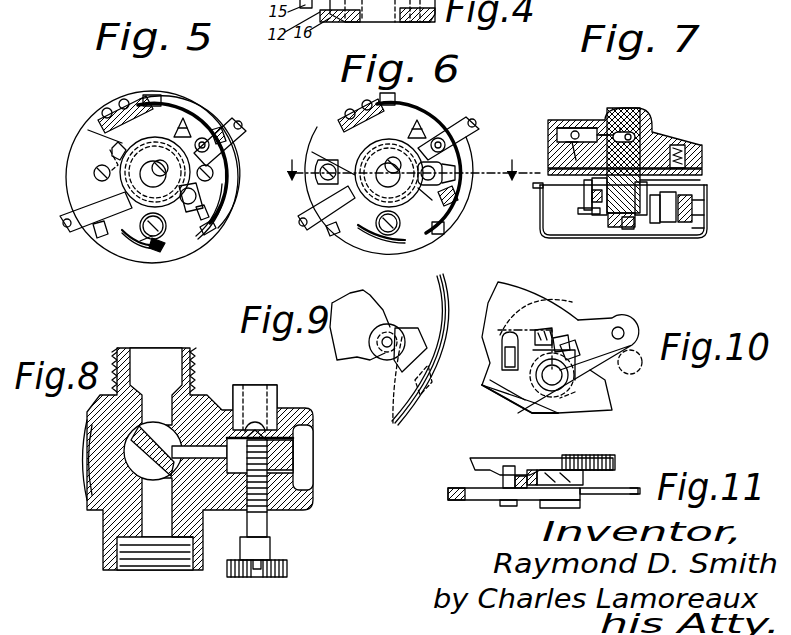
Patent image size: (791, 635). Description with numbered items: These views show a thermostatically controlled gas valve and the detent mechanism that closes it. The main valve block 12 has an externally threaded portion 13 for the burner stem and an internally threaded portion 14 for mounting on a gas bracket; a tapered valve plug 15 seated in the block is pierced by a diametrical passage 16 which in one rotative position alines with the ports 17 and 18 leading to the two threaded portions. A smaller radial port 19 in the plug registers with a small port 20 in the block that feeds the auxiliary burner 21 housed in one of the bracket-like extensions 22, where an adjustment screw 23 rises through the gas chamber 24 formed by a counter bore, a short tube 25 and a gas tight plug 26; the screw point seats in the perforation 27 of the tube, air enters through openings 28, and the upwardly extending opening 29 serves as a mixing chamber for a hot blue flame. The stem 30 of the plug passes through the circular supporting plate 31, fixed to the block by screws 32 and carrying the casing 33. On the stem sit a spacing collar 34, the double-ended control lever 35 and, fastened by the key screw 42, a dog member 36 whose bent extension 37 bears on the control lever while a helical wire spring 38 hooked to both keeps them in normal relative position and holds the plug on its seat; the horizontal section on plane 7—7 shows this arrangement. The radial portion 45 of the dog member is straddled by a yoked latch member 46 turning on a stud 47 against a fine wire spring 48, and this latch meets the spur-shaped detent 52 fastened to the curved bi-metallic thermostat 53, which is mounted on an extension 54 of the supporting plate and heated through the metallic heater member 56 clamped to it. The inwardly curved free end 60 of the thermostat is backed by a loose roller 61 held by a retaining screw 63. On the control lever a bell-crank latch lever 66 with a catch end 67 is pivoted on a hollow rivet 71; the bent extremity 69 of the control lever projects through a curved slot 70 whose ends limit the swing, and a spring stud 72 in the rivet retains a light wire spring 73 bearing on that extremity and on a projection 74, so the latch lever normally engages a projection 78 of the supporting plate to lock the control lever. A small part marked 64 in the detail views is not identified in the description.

In FIG. 6, the section plane 7— 7 is at (412, 178).
In FIG. 7, the main valve block 12 is at (650, 138).
In FIG. 8, the main valve block 12 is at (118, 432).
In FIG. 8, the externally threaded portion 13 is at (120, 350).
In FIG. 8, the internally threaded portion 14 is at (126, 548).
In FIG. 7, the tapered valve plug 15 is at (628, 128).
In FIG. 8, the tapered valve plug 15 is at (140, 443).
In FIG. 7, the diametrically extending passage 16 is at (634, 132).
In FIG. 8, the diametrically extending passage 16 is at (146, 458).
In FIG. 8, the port 17 is at (156, 400).
In FIG. 8, the port 18 is at (150, 510).
In FIG. 7, the smaller port 19 is at (617, 118).
In FIG. 8, the smaller port 19 is at (182, 540).
In FIG. 7, the small port 20 is at (602, 130).
In FIG. 8, the small port 20 is at (210, 460).
In FIG. 8, the auxiliary burner 21 is at (275, 407).
In FIG. 7, the bracket-like extensions 22 is at (686, 150).
In FIG. 8, the bracket-like extensions 22 is at (86, 488).
In FIG. 7, the adjustment screw 23 is at (568, 120).
In FIG. 8, the adjustment screw 23 is at (270, 548).
In FIG. 7, the gas chamber 24 is at (557, 135).
In FIG. 8, the gas chamber 24 is at (275, 462).
In FIG. 7, the short piece of tubing 25 is at (560, 125).
In FIG. 8, the short piece of tubing 25 is at (296, 437).
In FIG. 7, the gas tight plug 26 is at (562, 132).
In FIG. 8, the gas tight plug 26 is at (294, 455).
In FIG. 8, the perforation 27 is at (272, 397).
In FIG. 7, the openings 28 is at (584, 198).
In FIG. 8, the openings 28 is at (256, 430).
In FIG. 8, the upwardly extending opening 29 is at (225, 365).
In FIG. 5, the stem 30 is at (150, 171).
In FIG. 6, the stem 30 is at (384, 169).
In FIG. 7, the stem 30 is at (622, 222).
In FIG. 5, the circular supporting plate 31 is at (78, 170).
In FIG. 6, the circular supporting plate 31 is at (320, 142).
In FIG. 7, the circular supporting plate 31 is at (704, 173).
In FIG. 10, the circular supporting plate 31 is at (530, 302).
In FIG. 11, the circular supporting plate 31 is at (520, 462).
In FIG. 5, the screws 32 is at (97, 177).
In FIG. 7, the screws 32 is at (687, 162).
In FIG. 7, the casing 33 is at (560, 238).
In FIG. 7, the spacing collar 34 is at (702, 181).
In FIG. 5, the control lever 35 is at (88, 218).
In FIG. 6, the control lever 35 is at (312, 224).
In FIG. 7, the control lever 35 is at (566, 184).
In FIG. 10, the control lever 35 is at (500, 396).
In FIG. 11, the control lever 35 is at (448, 493).
In FIG. 5, the dog member 36 is at (100, 235).
In FIG. 6, the dog member 36 is at (338, 234).
In FIG. 7, the dog member 36 is at (600, 216).
In FIG. 9, the dog member 36 is at (360, 325).
In FIG. 5, the extension 37 is at (112, 152).
In FIG. 7, the extension 37 is at (578, 211).
In FIG. 5, the helical wire spring 38 is at (120, 150).
In FIG. 6, the helical wire spring 38 is at (419, 156).
In FIG. 7, the helical wire spring 38 is at (592, 205).
In FIG. 6, the key screw 42 is at (434, 200).
In FIG. 7, the key screw 42 is at (644, 218).
In FIG. 7, the radially extending portion 45 is at (656, 225).
In FIG. 9, the radially extending portion 45 is at (398, 378).
In FIG. 5, the yoked latch member 46 is at (190, 212).
In FIG. 6, the yoked latch member 46 is at (444, 168).
In FIG. 7, the yoked latch member 46 is at (690, 224).
In FIG. 9, the yoked latch member 46 is at (392, 330).
In FIG. 5, the stud 47 is at (210, 234).
In FIG. 7, the stud 47 is at (670, 224).
In FIG. 9, the stud 47 is at (392, 362).
In FIG. 7, the fine wire spring 48 is at (704, 203).
In FIG. 9, the fine wire spring 48 is at (375, 423).
In FIG. 5, the spur-shaped detent 52 is at (208, 190).
In FIG. 6, the spur-shaped detent 52 is at (460, 194).
In FIG. 7, the spur-shaped detent 52 is at (704, 216).
In FIG. 9, the spur-shaped detent 52 is at (420, 396).
In FIG. 5, the bi-metallic thermostat 53 is at (206, 212).
In FIG. 6, the bi-metallic thermostat 53 is at (456, 173).
In FIG. 7, the bi-metallic thermostat 53 is at (704, 230).
In FIG. 9, the bi-metallic thermostat 53 is at (446, 298).
In FIG. 5, the extension 54 is at (112, 120).
In FIG. 6, the metallic heater member 56 is at (352, 122).
In FIG. 5, the free end 60 is at (125, 252).
In FIG. 6, the free end 60 is at (376, 240).
In FIG. 9, the free end 60 is at (398, 308).
In FIG. 5, the loose roller 61 is at (152, 250).
In FIG. 6, the loose roller 61 is at (445, 232).
In FIG. 7, the loose roller 61 is at (630, 229).
In FIG. 5, the retaining screw 63 is at (160, 254).
In FIG. 5, the gear 64 is at (202, 145).
In FIG. 5, the latch lever 66 is at (240, 131).
In FIG. 6, the latch lever 66 is at (470, 128).
In FIG. 10, the latch lever 66 is at (622, 325).
In FIG. 11, the latch lever 66 is at (640, 486).
In FIG. 5, the catch formation 67 is at (192, 120).
In FIG. 10, the catch formation 67 is at (510, 332).
In FIG. 11, the catch formation 67 is at (517, 482).
In FIG. 10, the extremity 69 is at (632, 375).
In FIG. 11, the extremity 69 is at (600, 487).
In FIG. 10, the curved slot 70 is at (566, 338).
In FIG. 10, the pivot 71 is at (528, 405).
In FIG. 11, the pivot 71 is at (535, 500).
In FIG. 10, the spring stud 72 is at (536, 375).
In FIG. 11, the spring stud 72 is at (560, 472).
In FIG. 10, the light wire spring 73 is at (567, 347).
In FIG. 11, the light wire spring 73 is at (588, 456).
In FIG. 10, the projection 74 is at (548, 330).
In FIG. 11, the projection 74 is at (533, 470).
In FIG. 6, the projection 78 is at (316, 130).
In FIG. 10, the projection 78 is at (506, 350).
In FIG. 11, the projection 78 is at (505, 470).